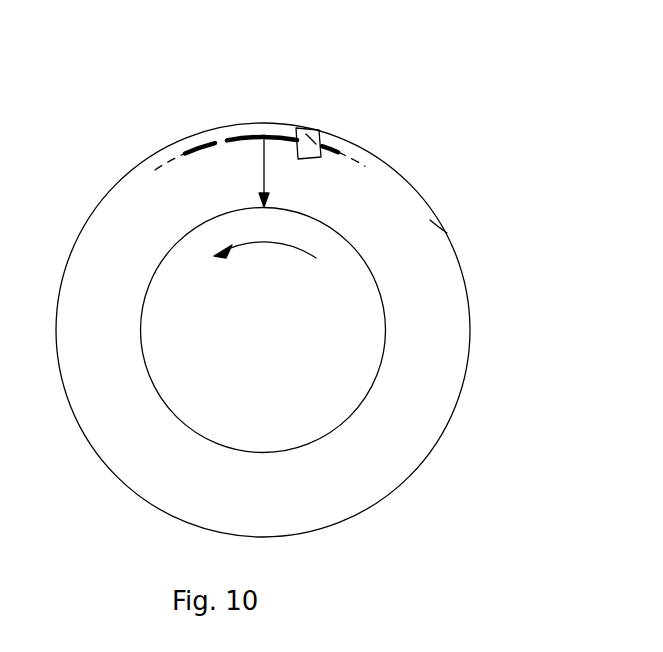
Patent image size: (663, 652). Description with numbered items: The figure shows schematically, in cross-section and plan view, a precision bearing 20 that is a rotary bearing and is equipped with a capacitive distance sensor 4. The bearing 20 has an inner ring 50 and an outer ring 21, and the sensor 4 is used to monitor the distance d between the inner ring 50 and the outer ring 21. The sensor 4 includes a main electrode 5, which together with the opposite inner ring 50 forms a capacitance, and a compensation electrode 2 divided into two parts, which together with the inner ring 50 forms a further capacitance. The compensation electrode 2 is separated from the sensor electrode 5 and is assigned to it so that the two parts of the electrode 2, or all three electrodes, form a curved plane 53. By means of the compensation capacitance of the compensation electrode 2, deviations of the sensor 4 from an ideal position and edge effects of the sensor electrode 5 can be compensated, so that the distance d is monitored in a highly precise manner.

The precision bearing 20 is at (257, 282).
The outer ring 21 is at (471, 229).
The inner ring 50 is at (275, 430).
The curved plane 53 is at (216, 149).
The compensation electrode 2 is at (297, 158).
The main electrode 5 is at (365, 123).
The distance sensor 4 is at (332, 80).
The distance d is at (292, 172).